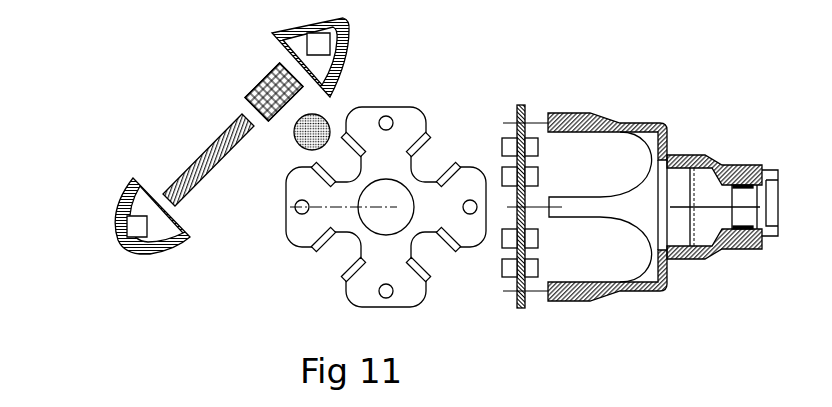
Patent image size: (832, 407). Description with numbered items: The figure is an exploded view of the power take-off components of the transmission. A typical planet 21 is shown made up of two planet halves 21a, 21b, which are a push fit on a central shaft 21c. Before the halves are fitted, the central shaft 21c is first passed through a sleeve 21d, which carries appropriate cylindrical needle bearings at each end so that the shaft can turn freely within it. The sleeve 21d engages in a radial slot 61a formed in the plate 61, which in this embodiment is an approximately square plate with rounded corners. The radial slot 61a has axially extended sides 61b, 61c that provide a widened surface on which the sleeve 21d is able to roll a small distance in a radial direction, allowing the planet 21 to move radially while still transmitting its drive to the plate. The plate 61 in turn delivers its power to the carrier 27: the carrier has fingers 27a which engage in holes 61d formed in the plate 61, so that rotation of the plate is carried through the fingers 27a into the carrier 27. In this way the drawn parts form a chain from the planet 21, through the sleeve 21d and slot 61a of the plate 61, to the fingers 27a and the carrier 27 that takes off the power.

The planet 21 is at (106, 164).
The planet half 21a is at (115, 217).
The planet half 21b is at (345, 50).
The central shaft 21c is at (200, 155).
The sleeve 21d is at (253, 82).
The plate 61 is at (407, 127).
The radial slot 61a is at (342, 253).
The axially extended side 61b is at (507, 142).
The axially extended side 61c is at (530, 143).
The hole 61d is at (390, 290).
The carrier 27 is at (637, 123).
The finger 27a is at (563, 115).